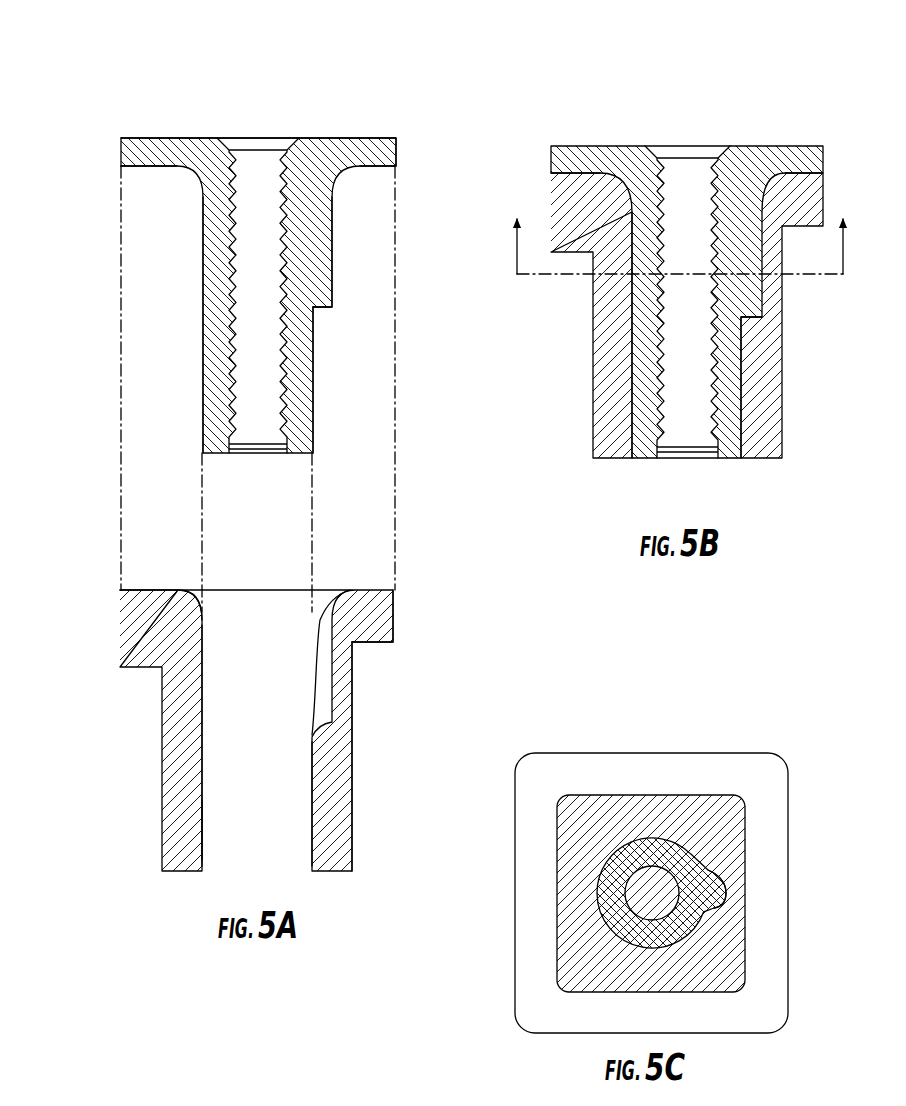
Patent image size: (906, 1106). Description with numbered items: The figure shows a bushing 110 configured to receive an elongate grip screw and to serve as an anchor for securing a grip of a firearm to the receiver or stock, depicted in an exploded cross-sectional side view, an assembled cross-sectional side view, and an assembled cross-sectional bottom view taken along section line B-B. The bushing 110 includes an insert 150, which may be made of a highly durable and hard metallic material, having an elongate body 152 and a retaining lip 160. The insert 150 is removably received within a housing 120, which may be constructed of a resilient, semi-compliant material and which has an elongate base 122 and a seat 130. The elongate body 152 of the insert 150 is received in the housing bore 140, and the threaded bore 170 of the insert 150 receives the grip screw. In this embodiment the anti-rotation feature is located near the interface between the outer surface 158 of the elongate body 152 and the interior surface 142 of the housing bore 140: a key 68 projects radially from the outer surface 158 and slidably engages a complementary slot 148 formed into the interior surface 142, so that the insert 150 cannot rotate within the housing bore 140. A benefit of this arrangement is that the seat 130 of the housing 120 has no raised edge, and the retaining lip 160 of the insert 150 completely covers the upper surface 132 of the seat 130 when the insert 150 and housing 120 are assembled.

In FIG. 5A, the bushing 110 is at (466, 87).
In FIG. 5B, the bushing 110 is at (536, 348).
In FIG. 5A, the housing 120 is at (108, 738).
In FIG. 5B, the housing 120 is at (598, 385).
In FIG. 5A, the elongate base 122 is at (352, 767).
In FIG. 5C, the elongate base 122 is at (558, 897).
In FIG. 5A, the seat 130 is at (395, 620).
In FIG. 5C, the seat 130 is at (560, 752).
In FIG. 5A, the upper surface of the seat 132 is at (153, 589).
In FIG. 5A, the housing bore 140 is at (270, 753).
In FIG. 5A, the interior surface of the housing bore 142 is at (202, 826).
In FIG. 5A, the slot 148 is at (323, 690).
In FIG. 5A, the insert 150 is at (136, 290).
In FIG. 5B, the insert 150 is at (583, 155).
In FIG. 5A, the elongate body 152 is at (313, 378).
In FIG. 5C, the elongate body 152 is at (673, 877).
In FIG. 5A, the outer surface of the elongate body 158 is at (203, 377).
In FIG. 5A, the retaining lip 160 is at (397, 150).
In FIG. 5A, the threaded bore 170 is at (270, 278).
In FIG. 5A, the key / shoulder 68 is at (323, 255).
In FIG. 5C, the key / shoulder 68 is at (722, 893).